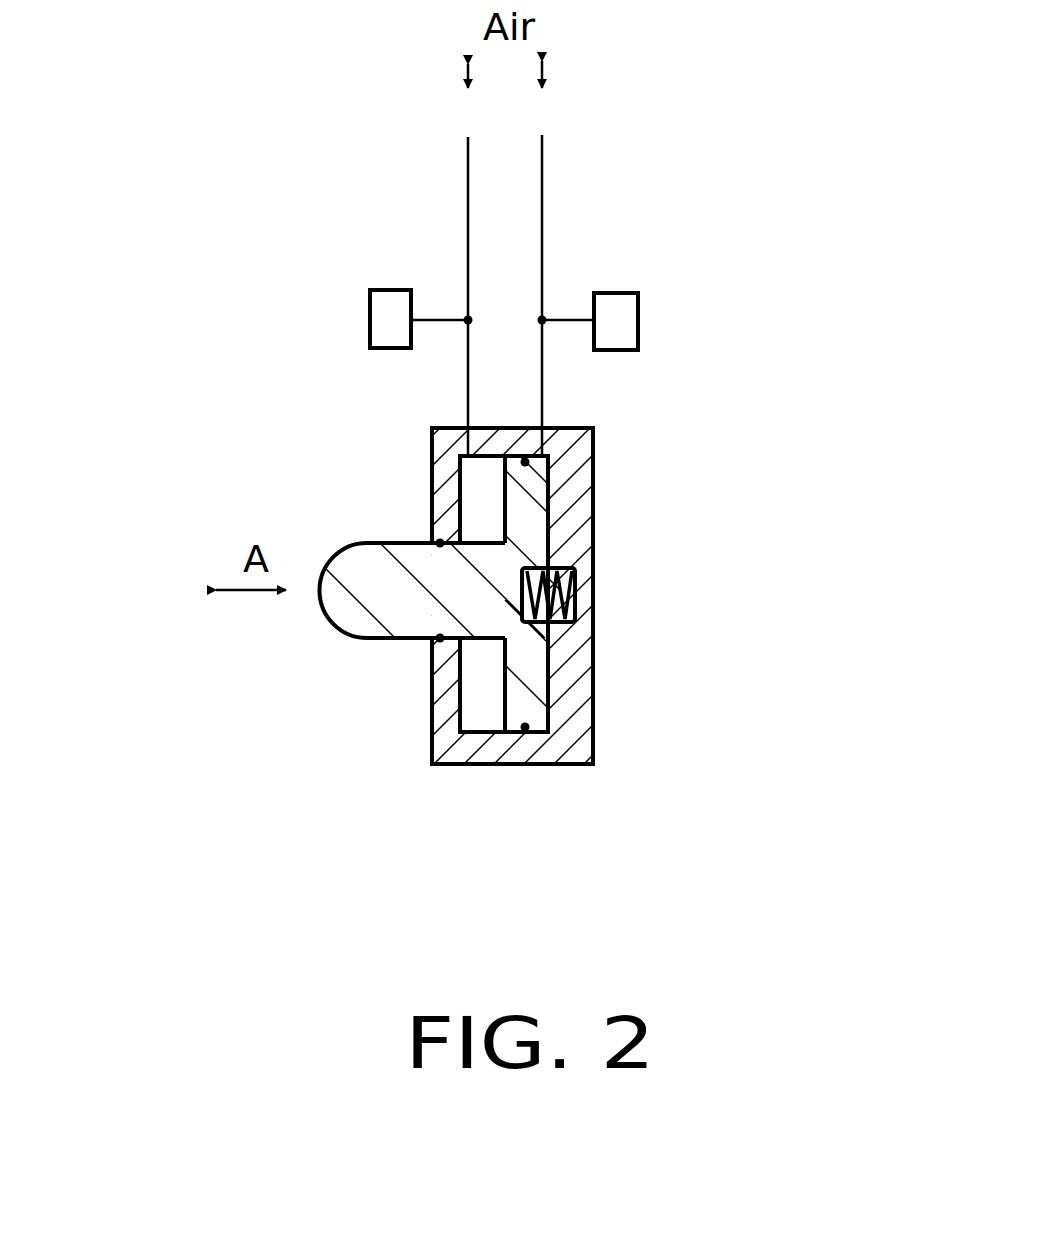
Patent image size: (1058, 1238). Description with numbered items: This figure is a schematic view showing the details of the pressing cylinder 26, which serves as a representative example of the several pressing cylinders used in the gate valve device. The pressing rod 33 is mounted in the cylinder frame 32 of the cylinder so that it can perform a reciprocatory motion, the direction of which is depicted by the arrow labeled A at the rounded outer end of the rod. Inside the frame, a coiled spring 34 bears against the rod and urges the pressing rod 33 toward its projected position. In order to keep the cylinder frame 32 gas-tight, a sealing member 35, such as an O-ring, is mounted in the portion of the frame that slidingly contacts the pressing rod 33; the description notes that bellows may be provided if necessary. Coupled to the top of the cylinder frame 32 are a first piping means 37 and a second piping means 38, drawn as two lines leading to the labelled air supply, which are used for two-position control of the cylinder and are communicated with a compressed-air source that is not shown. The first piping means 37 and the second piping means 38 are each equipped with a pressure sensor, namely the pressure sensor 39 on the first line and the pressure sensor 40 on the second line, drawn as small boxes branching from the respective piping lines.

The pressing cylinder 26 is at (609, 491).
The cylinder frame 32 is at (596, 700).
The pressing rod 33 is at (365, 616).
The coiled spring 34 is at (596, 582).
The sealing member 35 is at (432, 640).
The first piping means 37 is at (468, 176).
The second piping means 38 is at (542, 172).
The pressure sensor 39 is at (375, 310).
The pressure sensor 40 is at (626, 316).